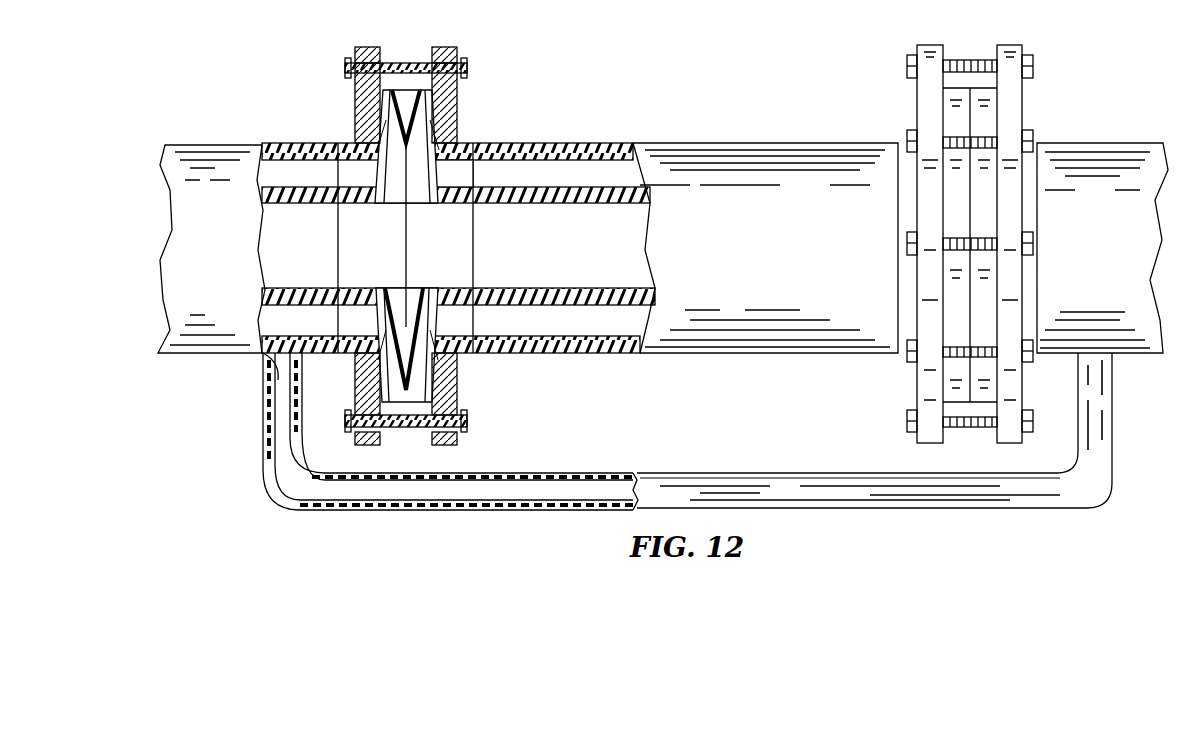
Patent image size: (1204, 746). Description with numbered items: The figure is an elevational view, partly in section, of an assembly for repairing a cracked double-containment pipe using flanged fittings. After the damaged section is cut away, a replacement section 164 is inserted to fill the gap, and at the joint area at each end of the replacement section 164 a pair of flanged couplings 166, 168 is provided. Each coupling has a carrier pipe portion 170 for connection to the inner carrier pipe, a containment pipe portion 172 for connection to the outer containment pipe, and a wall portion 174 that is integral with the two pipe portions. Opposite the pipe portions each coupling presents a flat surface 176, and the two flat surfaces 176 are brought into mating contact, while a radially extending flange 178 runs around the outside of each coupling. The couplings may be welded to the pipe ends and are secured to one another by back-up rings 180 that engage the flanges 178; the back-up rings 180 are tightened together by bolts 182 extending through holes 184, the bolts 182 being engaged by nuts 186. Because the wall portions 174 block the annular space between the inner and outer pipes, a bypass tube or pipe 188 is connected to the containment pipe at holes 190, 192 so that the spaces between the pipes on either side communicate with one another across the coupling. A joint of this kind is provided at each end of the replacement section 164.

The replacement section 164 is at (683, 175).
The flanged coupling 166 is at (457, 142).
The flanged coupling 168 is at (395, 157).
The carrier pipe portion 170 is at (442, 195).
The containment pipe portion 172 is at (437, 173).
The wall portion 174 is at (498, 150).
The flat surface 176 is at (358, 202).
The radially extending flange 178 is at (440, 388).
The back-up ring 180 is at (360, 95).
The bolt 182 is at (980, 135).
The hole 184 is at (367, 47).
The nut 186 is at (348, 65).
The bypass tube 188 is at (645, 472).
The hole 190 is at (268, 368).
The hole 192 is at (1112, 355).